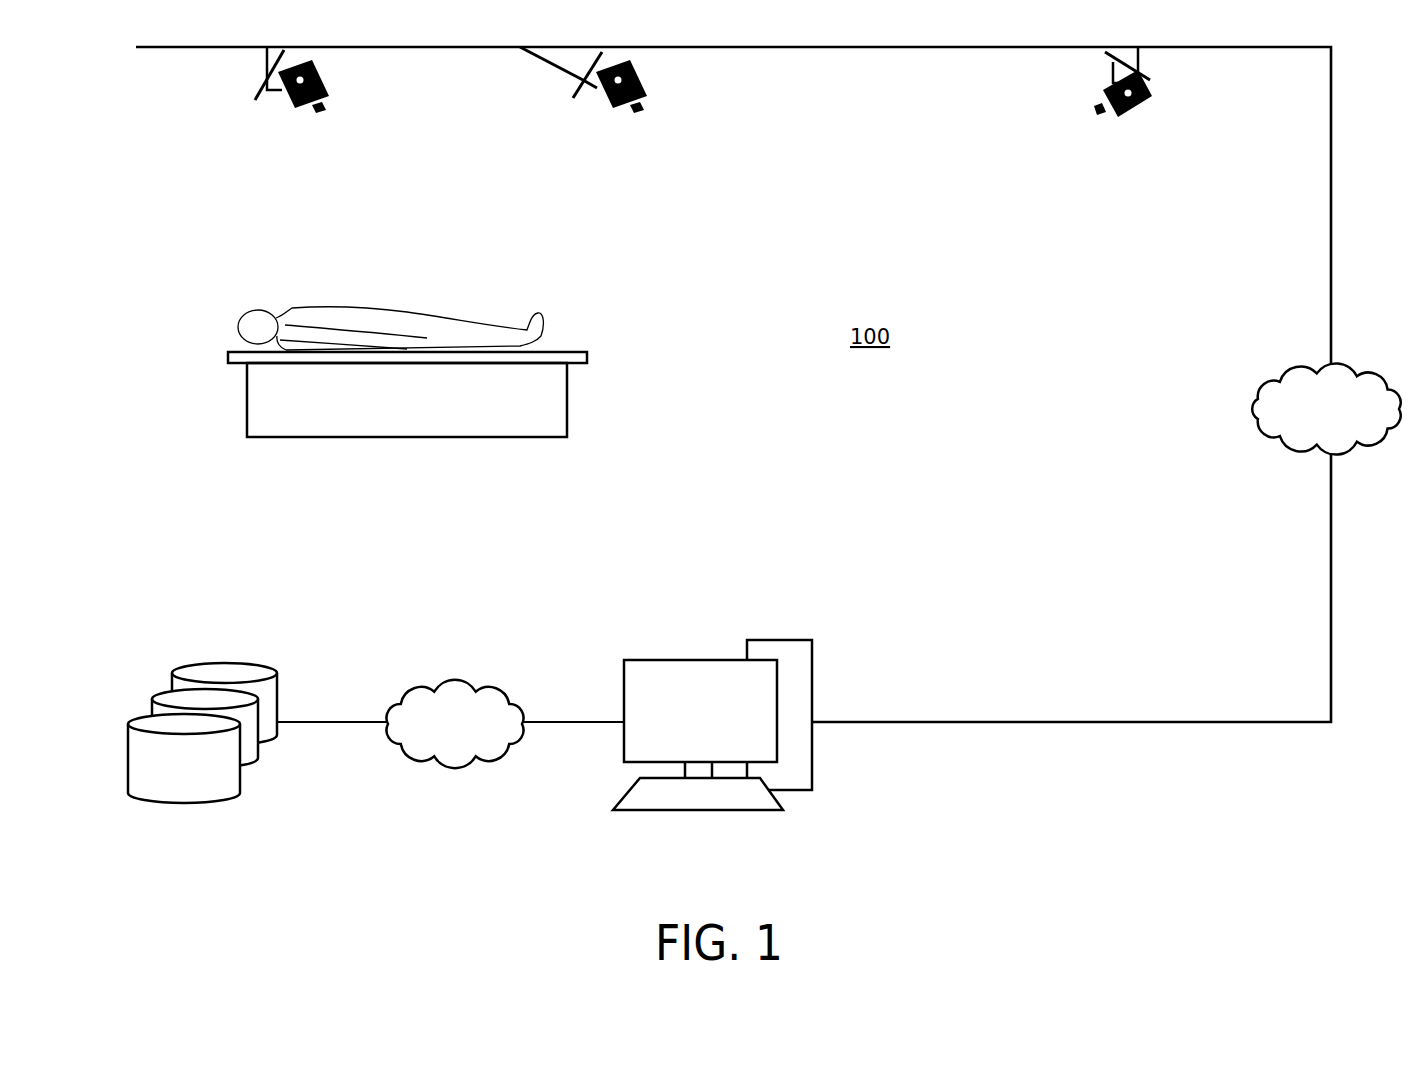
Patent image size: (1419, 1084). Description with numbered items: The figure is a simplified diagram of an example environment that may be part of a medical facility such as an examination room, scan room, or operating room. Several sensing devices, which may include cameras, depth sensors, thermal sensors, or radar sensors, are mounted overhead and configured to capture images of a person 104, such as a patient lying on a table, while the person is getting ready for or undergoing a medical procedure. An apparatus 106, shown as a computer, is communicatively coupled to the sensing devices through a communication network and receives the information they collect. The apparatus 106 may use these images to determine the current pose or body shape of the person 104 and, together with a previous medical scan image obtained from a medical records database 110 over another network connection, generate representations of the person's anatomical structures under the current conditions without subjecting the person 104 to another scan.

The person 104 is at (337, 317).
The apparatus 106 is at (660, 672).
The medical records database 110 is at (230, 773).